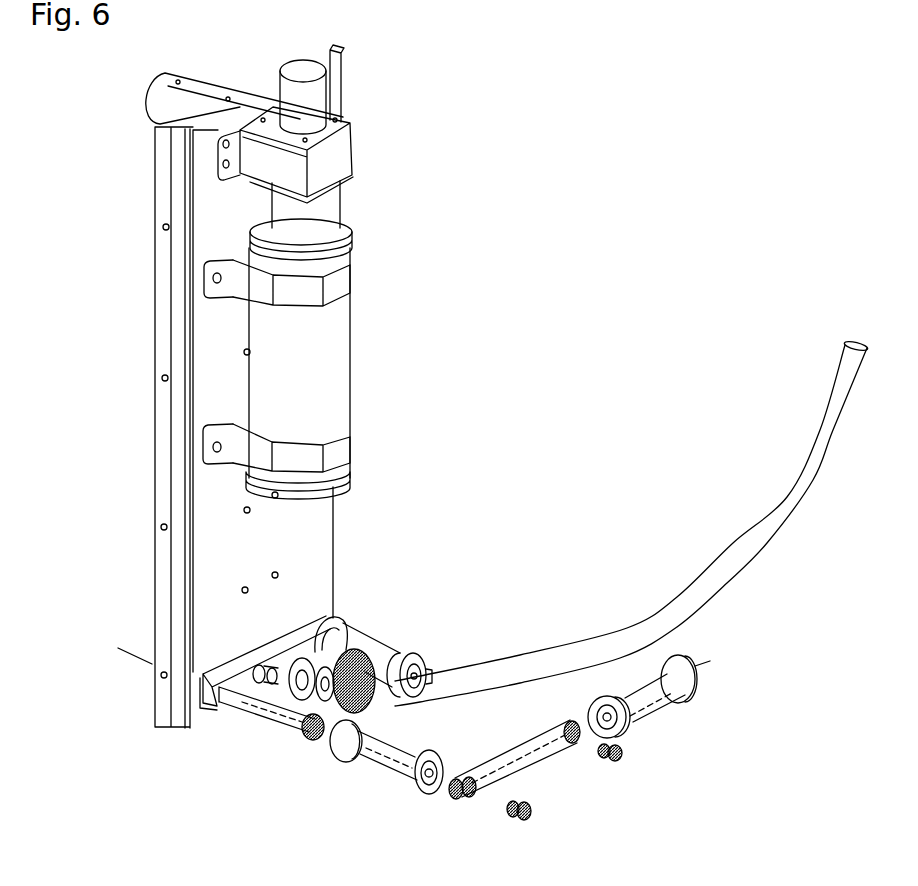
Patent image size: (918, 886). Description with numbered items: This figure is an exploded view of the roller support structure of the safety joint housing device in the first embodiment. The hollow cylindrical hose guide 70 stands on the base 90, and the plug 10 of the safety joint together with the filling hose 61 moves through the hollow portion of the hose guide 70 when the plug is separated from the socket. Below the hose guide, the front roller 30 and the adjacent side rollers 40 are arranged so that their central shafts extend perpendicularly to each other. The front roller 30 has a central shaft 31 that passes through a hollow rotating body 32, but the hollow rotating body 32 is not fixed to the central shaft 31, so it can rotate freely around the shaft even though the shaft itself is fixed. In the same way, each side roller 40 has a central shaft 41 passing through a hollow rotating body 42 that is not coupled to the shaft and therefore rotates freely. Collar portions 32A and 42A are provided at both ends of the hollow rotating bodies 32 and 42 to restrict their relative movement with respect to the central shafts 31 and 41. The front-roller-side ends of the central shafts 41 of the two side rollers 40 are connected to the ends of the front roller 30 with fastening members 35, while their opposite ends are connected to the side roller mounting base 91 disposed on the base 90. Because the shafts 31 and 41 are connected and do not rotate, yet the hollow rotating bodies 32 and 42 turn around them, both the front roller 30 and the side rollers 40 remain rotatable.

The plug 10 is at (330, 643).
The front roller 30 is at (582, 768).
The central shaft 31 is at (540, 760).
The hollow rotating body 32 is at (656, 710).
The collar portion 32A is at (585, 698).
The fastening member 35 is at (528, 817).
The side roller 40 is at (396, 624).
The central shaft 41 is at (262, 722).
The hollow rotating body 42 is at (378, 775).
The collar portion 42A is at (343, 627).
The filling hose 61 is at (734, 543).
The hose guide 70 is at (338, 373).
The base 90 is at (336, 531).
The side roller mounting base 91 is at (206, 724).